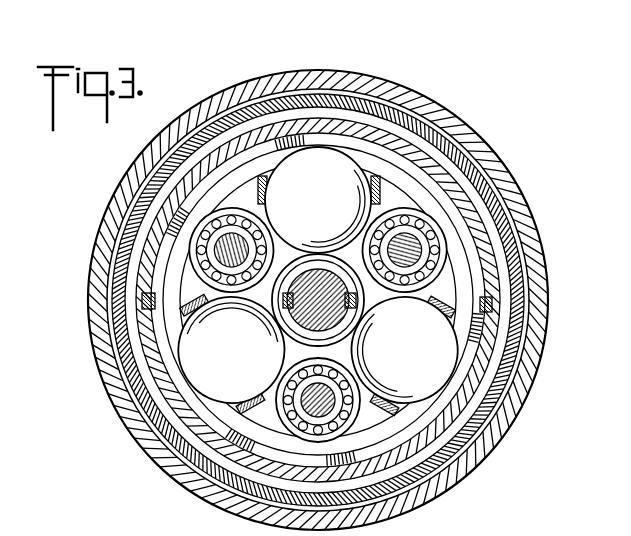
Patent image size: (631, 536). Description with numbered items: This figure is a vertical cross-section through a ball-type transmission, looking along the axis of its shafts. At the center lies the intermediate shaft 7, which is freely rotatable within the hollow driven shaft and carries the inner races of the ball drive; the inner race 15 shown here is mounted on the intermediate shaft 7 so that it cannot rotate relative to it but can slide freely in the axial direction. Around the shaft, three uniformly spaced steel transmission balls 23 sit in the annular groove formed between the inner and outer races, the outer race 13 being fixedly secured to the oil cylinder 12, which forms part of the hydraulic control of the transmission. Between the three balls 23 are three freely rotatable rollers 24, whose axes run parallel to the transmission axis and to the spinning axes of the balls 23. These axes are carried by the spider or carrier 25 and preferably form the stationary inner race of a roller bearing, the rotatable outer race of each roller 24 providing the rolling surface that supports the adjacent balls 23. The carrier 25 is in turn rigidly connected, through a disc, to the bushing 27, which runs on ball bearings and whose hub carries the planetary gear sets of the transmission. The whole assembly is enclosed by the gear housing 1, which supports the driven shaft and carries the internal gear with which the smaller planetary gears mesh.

The gear housing 1 is at (347, 82).
The intermediate shaft 7 is at (314, 282).
The oil cylinder 12 is at (486, 222).
The outer race 13 is at (478, 266).
The inner race 15 is at (351, 326).
The transmission balls 23 is at (329, 182).
The rollers 24 is at (230, 218).
The carrier 25 is at (366, 425).
The bushing 27 is at (516, 394).